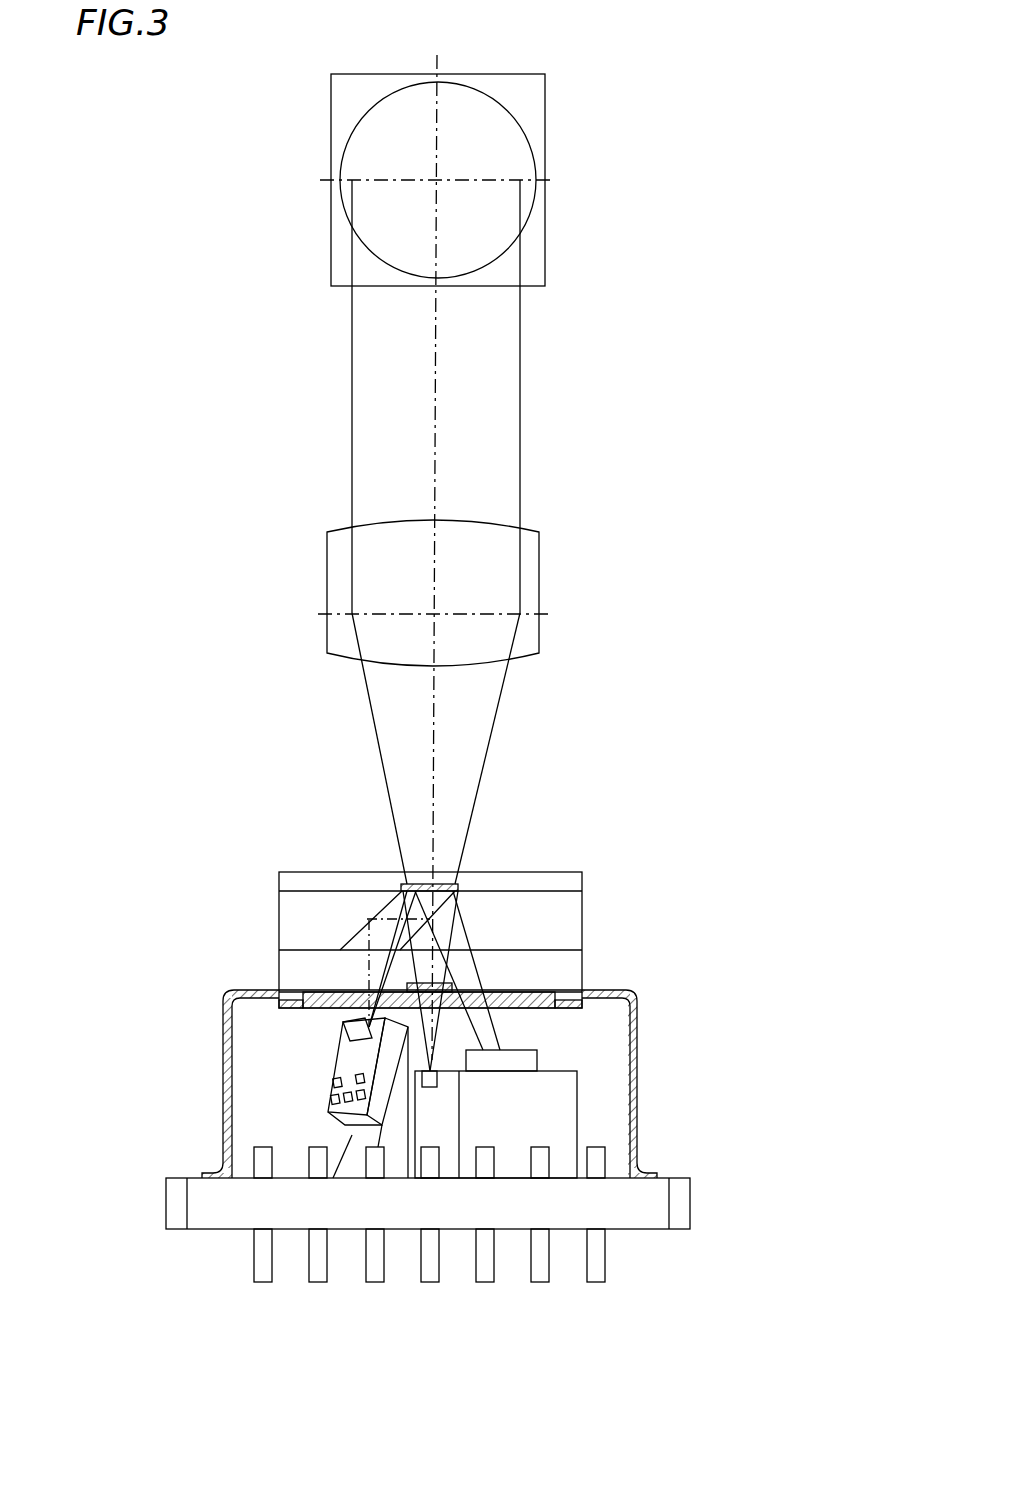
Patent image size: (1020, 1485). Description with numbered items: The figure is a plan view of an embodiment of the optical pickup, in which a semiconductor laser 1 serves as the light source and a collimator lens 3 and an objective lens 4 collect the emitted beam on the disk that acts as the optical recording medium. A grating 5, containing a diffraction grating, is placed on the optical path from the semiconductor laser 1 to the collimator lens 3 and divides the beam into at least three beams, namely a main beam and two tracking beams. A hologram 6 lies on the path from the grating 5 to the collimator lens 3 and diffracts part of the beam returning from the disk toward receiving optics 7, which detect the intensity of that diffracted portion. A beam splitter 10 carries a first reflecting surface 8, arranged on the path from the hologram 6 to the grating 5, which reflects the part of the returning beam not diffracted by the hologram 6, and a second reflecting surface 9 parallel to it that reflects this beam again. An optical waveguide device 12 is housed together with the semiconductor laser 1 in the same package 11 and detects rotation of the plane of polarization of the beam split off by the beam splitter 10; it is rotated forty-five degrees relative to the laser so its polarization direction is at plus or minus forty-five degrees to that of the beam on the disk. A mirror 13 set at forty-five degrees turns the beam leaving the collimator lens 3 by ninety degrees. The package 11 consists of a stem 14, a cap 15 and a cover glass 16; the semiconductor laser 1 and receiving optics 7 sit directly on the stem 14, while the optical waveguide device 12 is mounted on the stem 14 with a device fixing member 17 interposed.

The semiconductor laser 1 is at (438, 1078).
The collimator lens 3 is at (539, 581).
The objective lens 4 is at (502, 128).
The grating 5 is at (452, 985).
The hologram 6 is at (460, 884).
The receiving optics 7 is at (522, 1059).
The first reflecting surface 8 is at (425, 918).
The second reflecting surface 9 is at (368, 921).
The beam splitter 10 is at (279, 938).
The package 11 is at (223, 1043).
The optical waveguide device 12 is at (340, 1062).
The 45° mirror 13 is at (352, 96).
The stem 14 is at (213, 1242).
The cap 15 is at (638, 1135).
The cover glass 16 is at (290, 1001).
The device fixing member 17 is at (350, 1137).